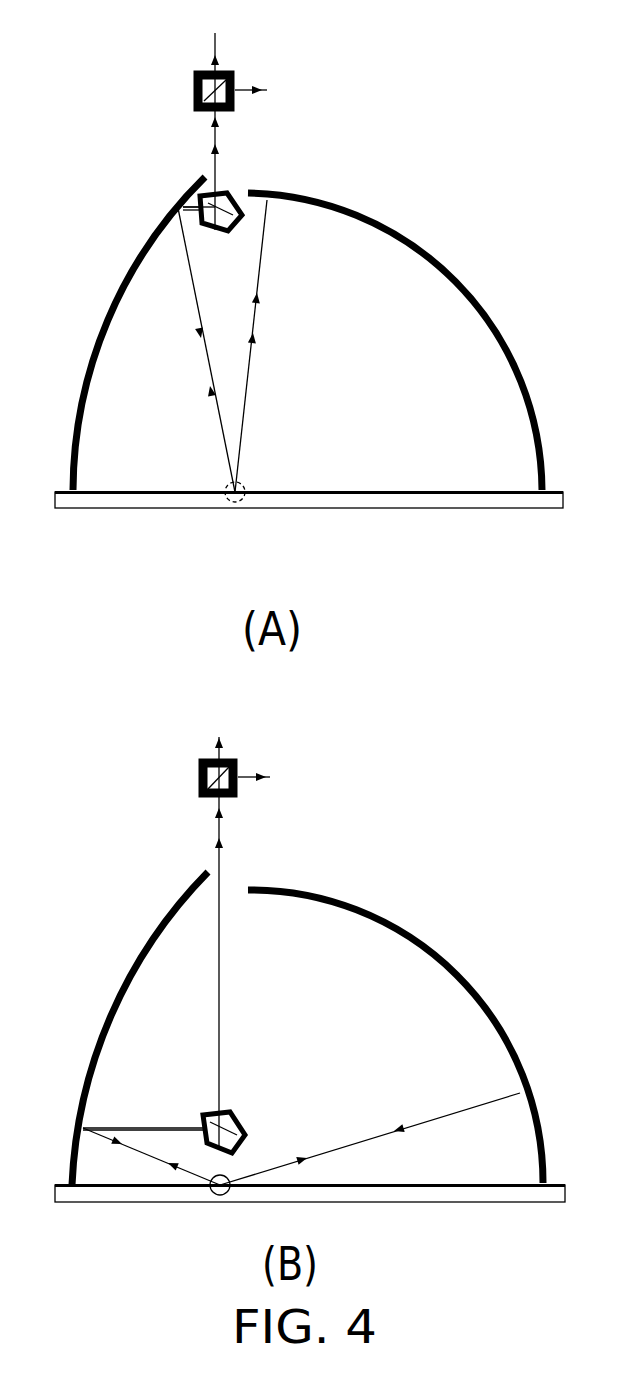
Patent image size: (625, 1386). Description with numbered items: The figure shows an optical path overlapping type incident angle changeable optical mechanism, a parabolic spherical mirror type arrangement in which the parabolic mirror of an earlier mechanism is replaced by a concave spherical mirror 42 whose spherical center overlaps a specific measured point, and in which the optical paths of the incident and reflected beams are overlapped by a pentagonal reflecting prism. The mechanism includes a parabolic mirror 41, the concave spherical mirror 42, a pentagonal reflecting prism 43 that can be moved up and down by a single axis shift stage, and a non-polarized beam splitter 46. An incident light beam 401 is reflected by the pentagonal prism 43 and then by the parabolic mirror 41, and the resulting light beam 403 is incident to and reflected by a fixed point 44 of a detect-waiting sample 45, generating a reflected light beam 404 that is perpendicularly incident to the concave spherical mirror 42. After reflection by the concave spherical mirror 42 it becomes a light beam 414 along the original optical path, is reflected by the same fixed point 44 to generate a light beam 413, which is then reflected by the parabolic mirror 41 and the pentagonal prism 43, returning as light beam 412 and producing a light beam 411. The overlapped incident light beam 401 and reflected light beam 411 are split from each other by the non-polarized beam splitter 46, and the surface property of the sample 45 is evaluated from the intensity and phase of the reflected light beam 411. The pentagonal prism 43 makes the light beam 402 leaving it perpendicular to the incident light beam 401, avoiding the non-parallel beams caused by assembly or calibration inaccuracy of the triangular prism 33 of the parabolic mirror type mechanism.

The triangular prism 33 is at (220, 233).
The parabolic mirror 41 is at (108, 322).
The concave spherical mirror 42 is at (433, 257).
The pentagonal reflecting prism 43 is at (233, 1118).
The fixed point 44 is at (240, 503).
The detect-waiting sample 45 is at (373, 500).
The non-polarized beam splitter 46 is at (192, 437).
The incident light beam 401 is at (231, 556).
The light beam leaving the pentagonal prism 402 is at (143, 639).
The light beam 403 is at (159, 696).
The reflected light beam 404 is at (370, 692).
The reflected light beam 411 is at (264, 454).
The light beam 412 is at (197, 197).
The light beam 413 is at (184, 769).
The light beam 414 is at (334, 706).